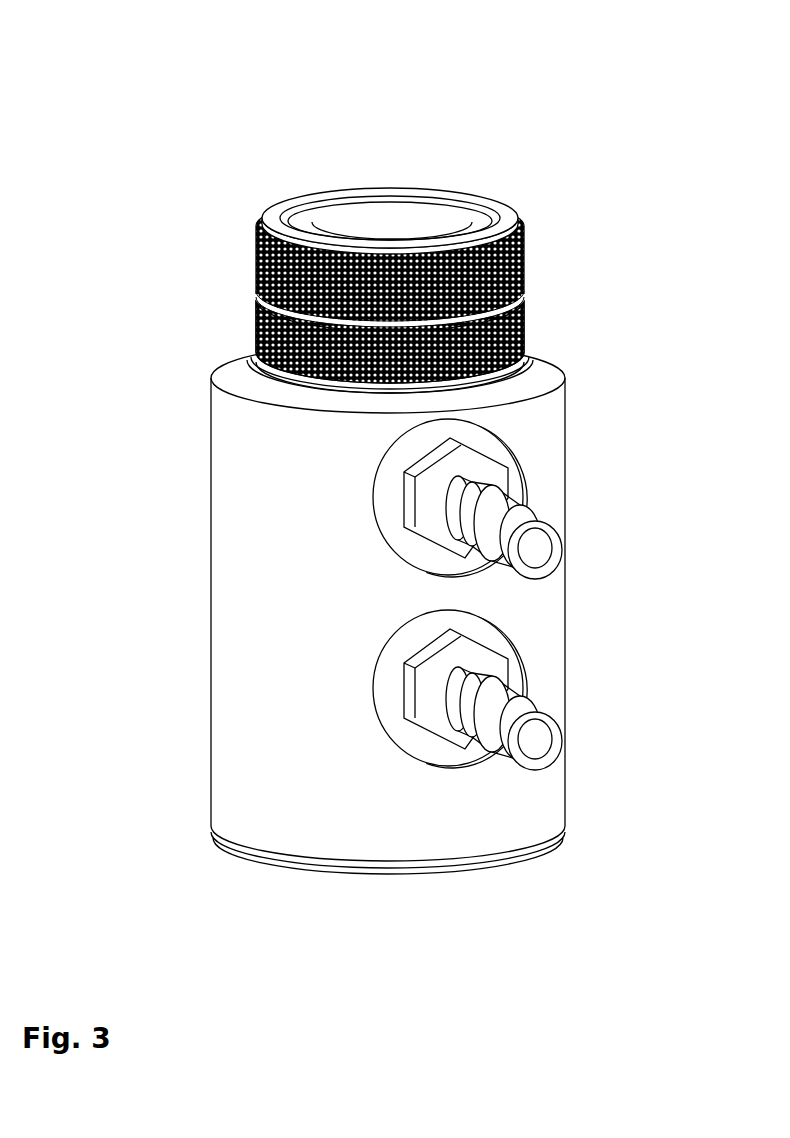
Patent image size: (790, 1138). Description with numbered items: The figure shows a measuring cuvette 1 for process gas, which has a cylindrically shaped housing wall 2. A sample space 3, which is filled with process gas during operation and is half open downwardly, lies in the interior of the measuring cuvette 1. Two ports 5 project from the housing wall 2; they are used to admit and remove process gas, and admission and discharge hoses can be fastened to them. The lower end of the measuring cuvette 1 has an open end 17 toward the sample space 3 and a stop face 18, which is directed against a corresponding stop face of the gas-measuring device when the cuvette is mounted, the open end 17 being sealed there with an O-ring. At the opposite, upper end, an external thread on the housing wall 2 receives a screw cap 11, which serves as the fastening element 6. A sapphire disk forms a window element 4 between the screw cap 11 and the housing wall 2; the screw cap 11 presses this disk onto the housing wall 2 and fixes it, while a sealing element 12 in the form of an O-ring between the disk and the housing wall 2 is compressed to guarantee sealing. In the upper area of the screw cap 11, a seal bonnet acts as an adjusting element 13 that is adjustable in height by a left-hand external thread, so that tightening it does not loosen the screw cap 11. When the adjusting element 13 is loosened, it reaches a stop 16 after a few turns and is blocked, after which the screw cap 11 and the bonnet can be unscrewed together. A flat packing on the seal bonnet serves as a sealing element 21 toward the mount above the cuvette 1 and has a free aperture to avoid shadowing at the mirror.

The measuring cuvette 1 is at (508, 121).
The housing wall 2 is at (243, 673).
The sample space 3 is at (183, 545).
The window element 4 is at (240, 360).
The ports 5 is at (530, 705).
The fastening element 6 is at (213, 301).
The screw cap 11 is at (527, 338).
The sealing element 12 is at (518, 381).
The adjusting element 13 is at (527, 278).
The stop 16 is at (525, 307).
The open end 17 is at (435, 904).
The stop face 18 is at (527, 858).
The sealing element 21 is at (515, 220).